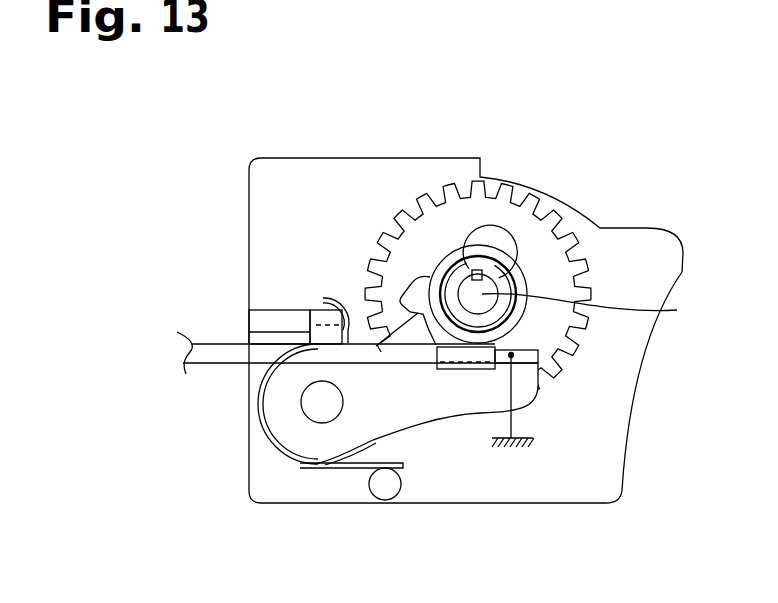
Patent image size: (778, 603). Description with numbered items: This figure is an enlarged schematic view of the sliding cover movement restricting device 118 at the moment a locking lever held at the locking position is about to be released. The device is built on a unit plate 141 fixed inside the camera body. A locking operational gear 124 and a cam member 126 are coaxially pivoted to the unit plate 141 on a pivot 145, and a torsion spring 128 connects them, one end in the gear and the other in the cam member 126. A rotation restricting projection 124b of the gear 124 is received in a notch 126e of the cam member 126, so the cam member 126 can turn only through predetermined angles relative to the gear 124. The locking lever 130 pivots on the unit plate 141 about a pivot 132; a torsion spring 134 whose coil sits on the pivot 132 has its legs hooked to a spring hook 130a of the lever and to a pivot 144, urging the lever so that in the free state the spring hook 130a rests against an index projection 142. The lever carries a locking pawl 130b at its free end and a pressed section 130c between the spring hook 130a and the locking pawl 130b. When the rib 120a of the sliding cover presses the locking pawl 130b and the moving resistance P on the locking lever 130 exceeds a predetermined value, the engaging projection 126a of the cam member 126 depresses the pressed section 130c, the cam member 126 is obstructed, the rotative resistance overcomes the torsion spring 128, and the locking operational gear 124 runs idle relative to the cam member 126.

The unit plate 141 is at (283, 178).
The pivot 145 is at (658, 309).
The locking operational gear 124 is at (567, 239).
The rotation restricting projection 124b is at (467, 271).
The cam member 126 is at (479, 233).
The engaging projection 126a is at (408, 294).
The notch 126e is at (488, 270).
The torsion spring 128 is at (483, 292).
The sliding cover movement restricting device 118 is at (567, 110).
The rib 120a is at (217, 357).
The index projection 142 is at (272, 328).
The spring hook 130a is at (322, 310).
The pivot 132 is at (317, 402).
The locking lever 130 is at (450, 405).
The locking pawl 130b is at (545, 352).
The pressed section 130c is at (410, 335).
The moving resistance value P is at (514, 414).
The torsion spring 134 is at (320, 469).
The pivot 144 is at (387, 490).